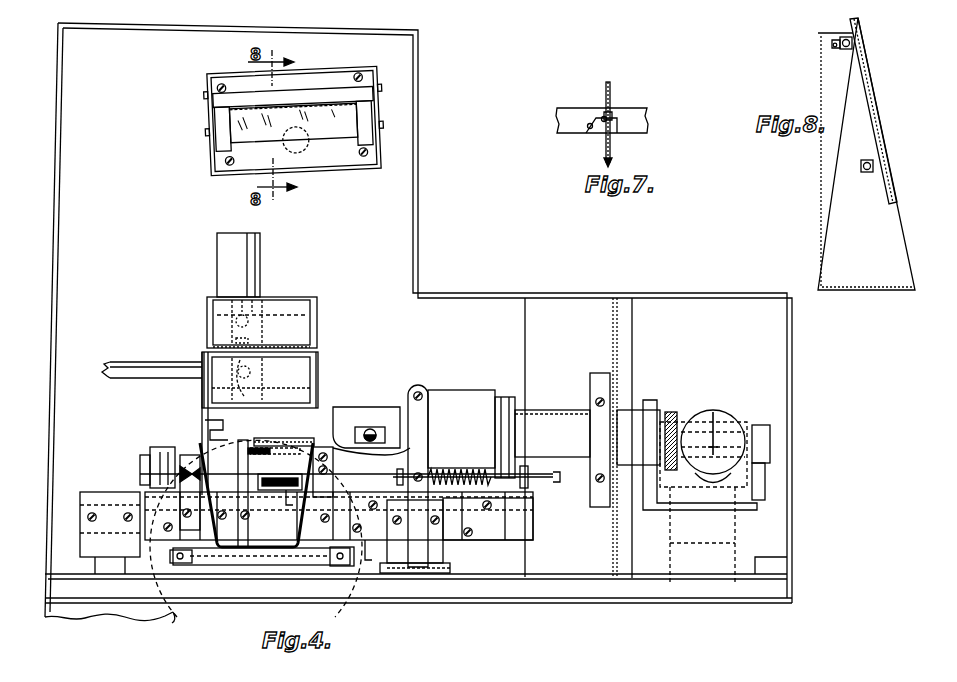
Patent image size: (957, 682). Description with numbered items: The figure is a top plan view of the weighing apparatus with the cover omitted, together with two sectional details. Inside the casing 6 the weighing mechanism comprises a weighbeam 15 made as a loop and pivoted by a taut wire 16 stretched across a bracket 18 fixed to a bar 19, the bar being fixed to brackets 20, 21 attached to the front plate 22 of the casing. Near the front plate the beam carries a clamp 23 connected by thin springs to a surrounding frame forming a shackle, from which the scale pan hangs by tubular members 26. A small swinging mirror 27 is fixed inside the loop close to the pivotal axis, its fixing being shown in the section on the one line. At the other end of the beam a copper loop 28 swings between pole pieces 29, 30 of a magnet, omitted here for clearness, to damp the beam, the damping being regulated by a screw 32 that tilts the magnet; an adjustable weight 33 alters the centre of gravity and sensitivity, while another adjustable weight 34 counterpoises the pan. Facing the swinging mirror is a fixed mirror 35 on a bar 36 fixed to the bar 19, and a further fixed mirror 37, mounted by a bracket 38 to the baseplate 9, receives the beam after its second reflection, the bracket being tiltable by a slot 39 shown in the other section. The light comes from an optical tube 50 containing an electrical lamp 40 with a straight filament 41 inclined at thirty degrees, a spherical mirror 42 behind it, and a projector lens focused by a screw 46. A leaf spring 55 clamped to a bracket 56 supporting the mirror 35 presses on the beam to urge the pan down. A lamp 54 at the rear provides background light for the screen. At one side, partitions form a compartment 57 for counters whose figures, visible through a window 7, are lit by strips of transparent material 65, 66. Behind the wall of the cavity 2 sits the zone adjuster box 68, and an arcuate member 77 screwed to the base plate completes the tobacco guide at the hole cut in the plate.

In FIG. 4, the cavity 2 is at (158, 578).
In FIG. 4, the casing 6 is at (538, 294).
In FIG. 4, the window 7 is at (280, 505).
In FIG. 4, the baseplate 9 is at (57, 342).
In FIG. 4, the weighbeam 15 is at (369, 410).
In FIG. 7, the weighbeam 15 is at (632, 116).
In FIG. 4, the taut wire 16 is at (170, 462).
In FIG. 4, the bracket 18 is at (370, 545).
In FIG. 4, the bar 19 is at (455, 535).
In FIG. 4, the bracket 20 is at (82, 538).
In FIG. 4, the bracket 21 is at (418, 572).
In FIG. 4, the front plate 22 is at (505, 579).
In FIG. 4, the clamp 23 is at (240, 567).
In FIG. 4, the tubular members 26 is at (182, 566).
In FIG. 4, the swinging mirror 27 is at (300, 506).
In FIG. 7, the swinging mirror 27 is at (606, 92).
In FIG. 4, the copper loop 28 is at (315, 378).
In FIG. 4, the pole piece 29 is at (278, 322).
In FIG. 4, the pole piece 30 is at (303, 364).
In FIG. 4, the screw 32 is at (262, 318).
In FIG. 4, the adjustable weight 33 is at (256, 488).
In FIG. 4, the adjustable weight 34 is at (212, 428).
In FIG. 4, the fixed mirror 35 is at (282, 452).
In FIG. 4, the bar 36 is at (240, 264).
In FIG. 4, the fixed mirror 37 is at (270, 135).
In FIG. 8, the fixed mirror 37 is at (878, 104).
In FIG. 4, the bracket 38 is at (302, 108).
In FIG. 8, the slot 39 is at (834, 50).
In FIG. 4, the electrical lamp 40 is at (716, 412).
In FIG. 4, the straight filament 41 is at (713, 412).
In FIG. 4, the spherical mirror 42 is at (760, 425).
In FIG. 4, the screw 46 is at (370, 428).
In FIG. 4, the optical tube 50 is at (470, 420).
In FIG. 4, the lamp 54 is at (304, 148).
In FIG. 4, the leaf spring 55 is at (274, 492).
In FIG. 4, the bracket 56 is at (258, 448).
In FIG. 4, the compartment 57 is at (655, 355).
In FIG. 4, the strip of transparent material 65 is at (740, 430).
In FIG. 4, the strip of transparent material 66 is at (713, 540).
In FIG. 4, the box 68 is at (430, 388).
In FIG. 4, the arcuate member 77 is at (170, 614).